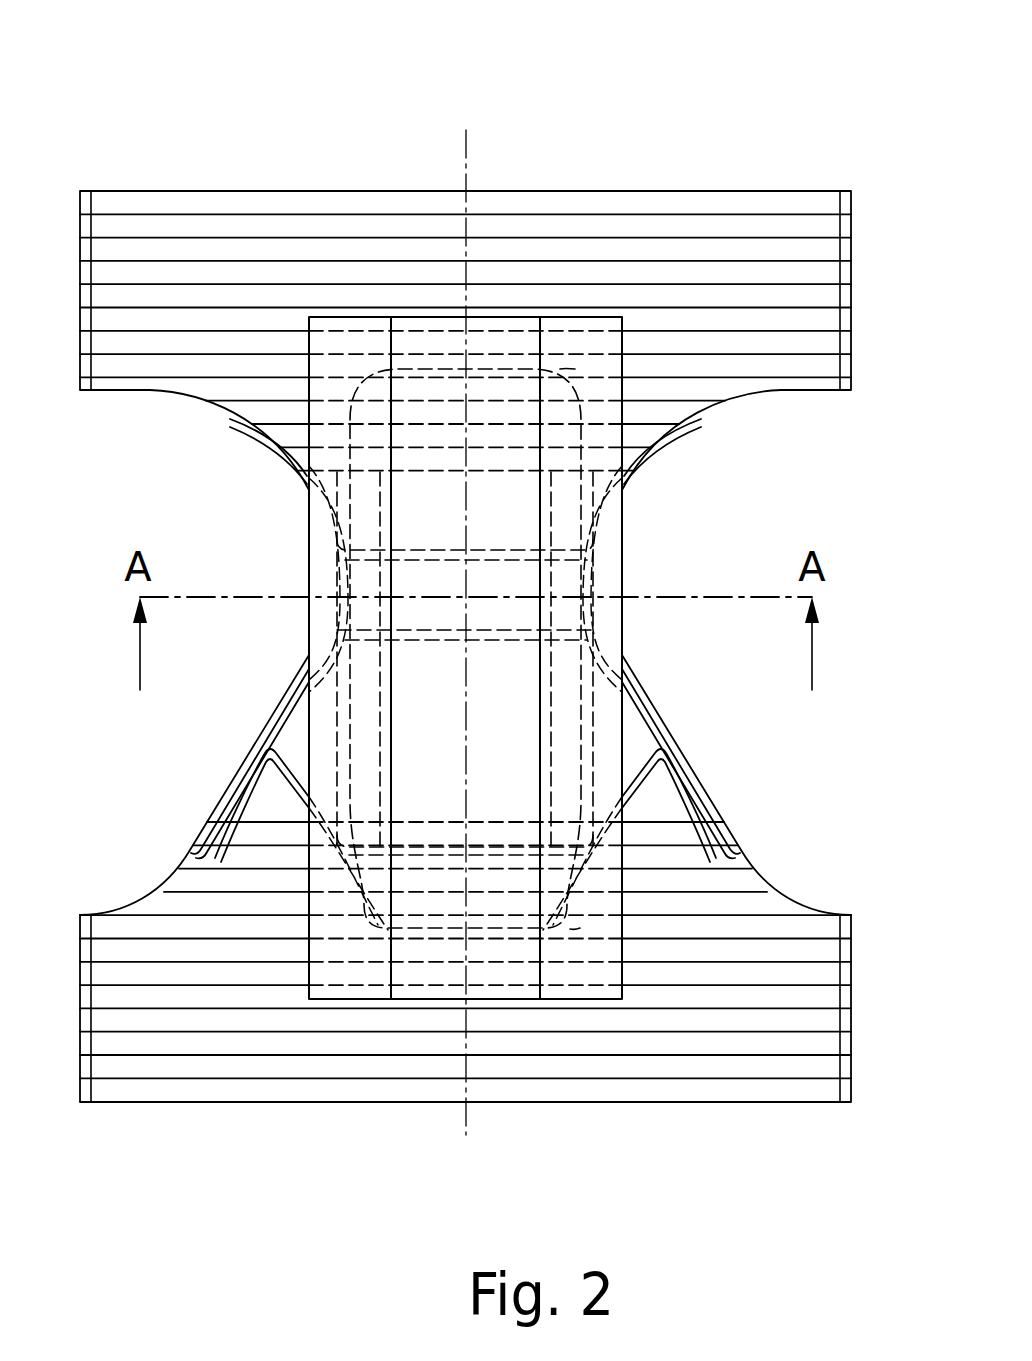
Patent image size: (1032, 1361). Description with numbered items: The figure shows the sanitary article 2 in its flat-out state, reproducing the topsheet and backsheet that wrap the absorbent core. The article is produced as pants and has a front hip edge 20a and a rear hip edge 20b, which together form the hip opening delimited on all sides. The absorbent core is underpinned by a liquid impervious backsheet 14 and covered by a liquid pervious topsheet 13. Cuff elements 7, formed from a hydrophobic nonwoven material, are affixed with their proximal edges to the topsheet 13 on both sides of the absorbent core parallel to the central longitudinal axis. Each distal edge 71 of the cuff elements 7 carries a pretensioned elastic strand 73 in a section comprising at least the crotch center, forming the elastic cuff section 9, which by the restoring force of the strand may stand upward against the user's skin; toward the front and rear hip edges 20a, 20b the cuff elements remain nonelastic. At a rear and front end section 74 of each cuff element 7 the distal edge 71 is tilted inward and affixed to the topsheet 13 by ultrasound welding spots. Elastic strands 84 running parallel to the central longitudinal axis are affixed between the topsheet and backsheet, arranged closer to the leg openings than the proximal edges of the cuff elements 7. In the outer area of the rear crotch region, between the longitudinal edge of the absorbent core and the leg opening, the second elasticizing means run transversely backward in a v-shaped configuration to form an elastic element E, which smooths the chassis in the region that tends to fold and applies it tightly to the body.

The sanitary article 2 is at (285, 162).
The front hip edge 20a is at (592, 191).
The rear hip edge 20b is at (705, 1103).
The topsheet 13 is at (418, 742).
The backsheet 14 is at (604, 556).
The distal edge 71 is at (540, 717).
The elastic strand 73 is at (550, 735).
The end section 74 is at (560, 369).
The elastic strands 84 is at (338, 710).
The elastic cuff section 9 is at (563, 743).
The cuff elements 7 is at (565, 800).
The elastic element E is at (633, 792).